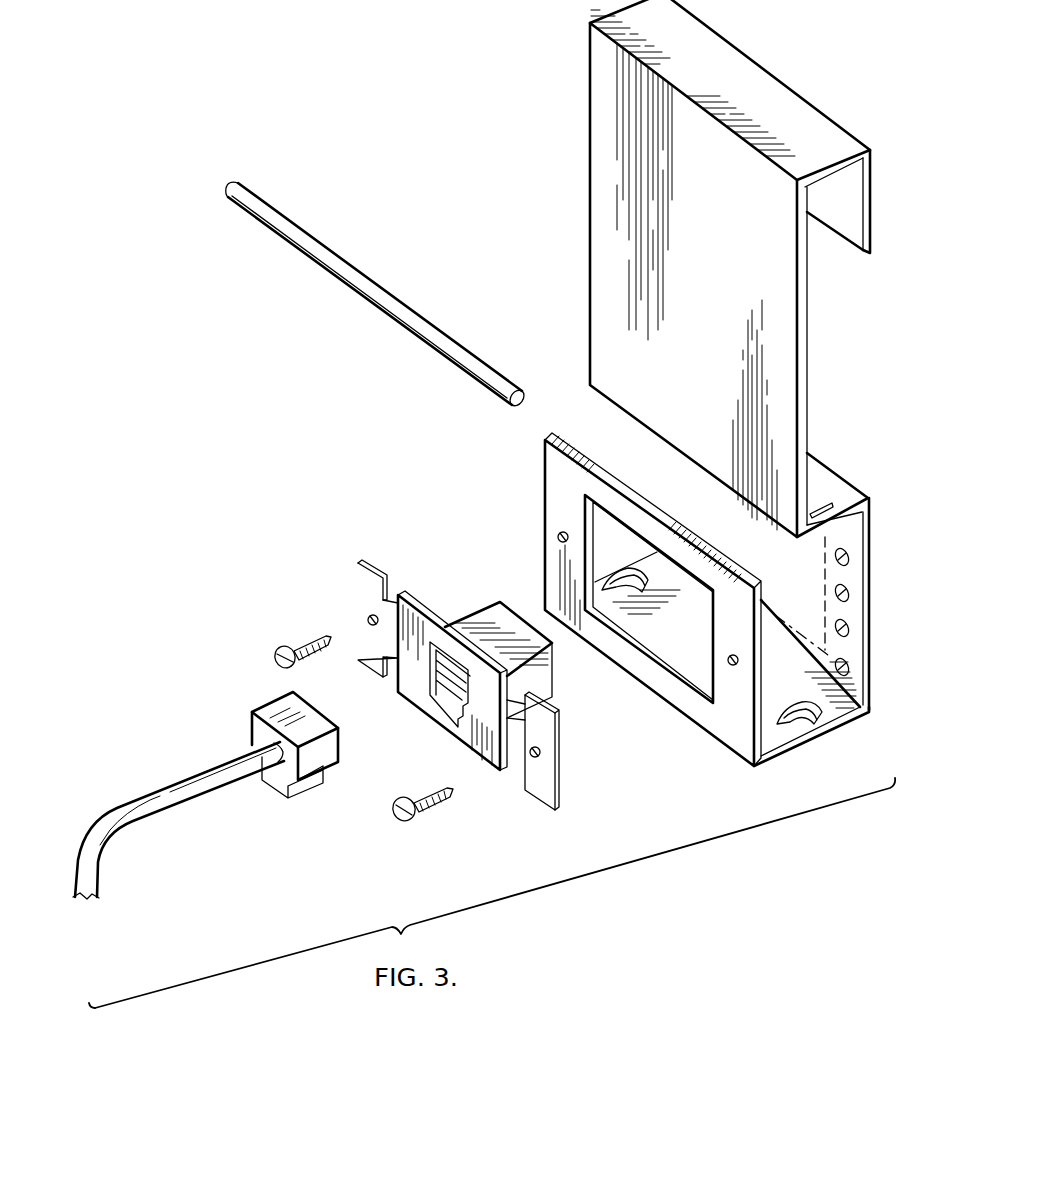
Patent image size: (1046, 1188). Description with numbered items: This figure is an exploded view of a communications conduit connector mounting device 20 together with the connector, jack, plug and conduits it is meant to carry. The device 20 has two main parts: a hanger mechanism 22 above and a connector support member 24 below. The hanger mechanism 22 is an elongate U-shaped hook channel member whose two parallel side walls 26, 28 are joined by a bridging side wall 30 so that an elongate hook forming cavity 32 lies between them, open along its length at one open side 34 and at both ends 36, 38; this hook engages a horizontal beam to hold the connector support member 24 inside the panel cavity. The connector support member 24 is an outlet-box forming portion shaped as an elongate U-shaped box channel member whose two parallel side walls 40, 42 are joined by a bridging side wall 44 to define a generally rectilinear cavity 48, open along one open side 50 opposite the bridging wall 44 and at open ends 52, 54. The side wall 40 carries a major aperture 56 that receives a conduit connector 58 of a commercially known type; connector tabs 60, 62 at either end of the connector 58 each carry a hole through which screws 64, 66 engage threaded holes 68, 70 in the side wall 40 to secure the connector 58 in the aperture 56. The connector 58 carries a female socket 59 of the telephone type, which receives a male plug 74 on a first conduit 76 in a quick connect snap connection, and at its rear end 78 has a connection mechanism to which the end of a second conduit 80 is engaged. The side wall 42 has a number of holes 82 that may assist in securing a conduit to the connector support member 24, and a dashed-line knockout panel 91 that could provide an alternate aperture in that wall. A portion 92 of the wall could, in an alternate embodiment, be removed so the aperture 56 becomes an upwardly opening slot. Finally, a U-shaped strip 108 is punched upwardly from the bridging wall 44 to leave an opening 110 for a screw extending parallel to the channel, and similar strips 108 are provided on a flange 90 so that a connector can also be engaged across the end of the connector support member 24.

The communications conduit connector mounting device 20 is at (535, 122).
The hanger mechanism 22 is at (893, 108).
The connector support member 24 is at (888, 727).
The side wall 26 is at (807, 347).
The side wall 28 is at (860, 225).
The bridging side wall 30 is at (820, 163).
The hook forming cavity 32 is at (843, 185).
The open side 34 is at (819, 245).
The end 36 is at (792, 197).
The end 38 is at (580, 33).
The side wall 40 is at (748, 757).
The side wall 42 is at (870, 705).
The bridging side wall 44 is at (842, 718).
The cavity 48 is at (770, 722).
The open side 50 is at (800, 615).
The open end 52 is at (749, 600).
The open end 54 is at (543, 446).
The major aperture 56 is at (640, 625).
The conduit connector 58 is at (343, 563).
The female socket 59 is at (442, 712).
The connector tab 60 is at (365, 568).
The connector tab 62 is at (563, 722).
The screw 64 is at (290, 640).
The screw 66 is at (425, 814).
The threaded hole 68 is at (557, 537).
The threaded hole 70 is at (730, 666).
The male plug 74 is at (325, 780).
The first conduit 76 is at (175, 806).
The rear end 78 is at (500, 625).
The second conduit 80 is at (390, 295).
The holes 82 is at (844, 553).
The flange 90 is at (823, 473).
The knockout panel 91 is at (713, 497).
The portion of wall 92 is at (598, 497).
The U-shaped strip 108 is at (796, 705).
The opening 110 is at (800, 738).